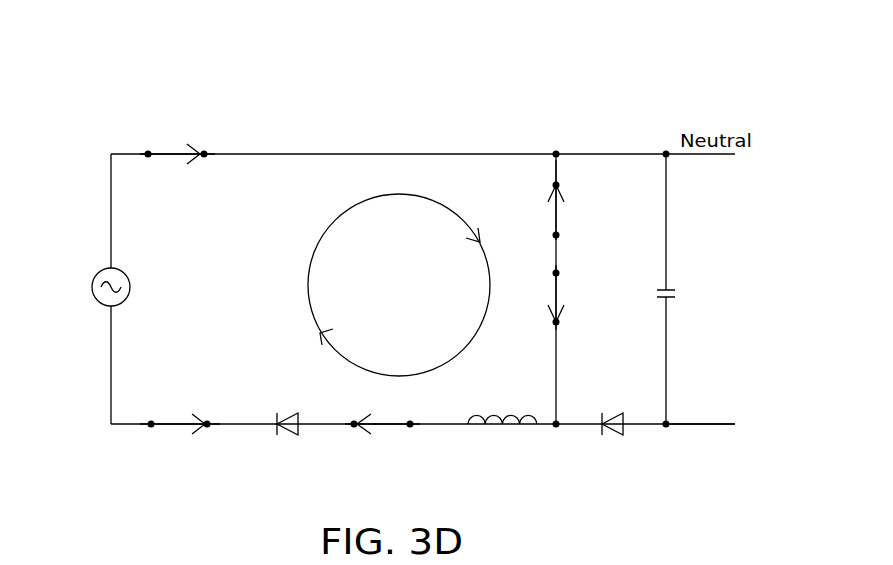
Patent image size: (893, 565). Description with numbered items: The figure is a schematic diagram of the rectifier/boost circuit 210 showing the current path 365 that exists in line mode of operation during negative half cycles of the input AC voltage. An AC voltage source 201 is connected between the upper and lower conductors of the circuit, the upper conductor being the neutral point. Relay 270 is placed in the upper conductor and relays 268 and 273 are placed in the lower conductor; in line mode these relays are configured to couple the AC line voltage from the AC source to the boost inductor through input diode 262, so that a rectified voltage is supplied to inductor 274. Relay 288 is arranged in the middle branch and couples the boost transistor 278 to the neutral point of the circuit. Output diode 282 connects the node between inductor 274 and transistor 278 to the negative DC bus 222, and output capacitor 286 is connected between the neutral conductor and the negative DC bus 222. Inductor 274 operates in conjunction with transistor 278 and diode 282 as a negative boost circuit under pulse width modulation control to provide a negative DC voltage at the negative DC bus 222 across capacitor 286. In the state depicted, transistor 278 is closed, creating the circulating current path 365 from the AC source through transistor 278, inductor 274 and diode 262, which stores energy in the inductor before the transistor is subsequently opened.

The rectifier/boost circuit 210 is at (562, 88).
The AC power source 201 is at (97, 273).
The relay 270 is at (169, 153).
The relay 268 is at (179, 426).
The input diode 262 is at (283, 435).
The relay 273 is at (380, 426).
The inductor 274 is at (512, 426).
The output diode 282 is at (607, 435).
The negative DC bus 222 is at (700, 426).
The output capacitor 286 is at (672, 300).
The relay 288 is at (558, 214).
The boost transistor 278 is at (558, 287).
The current path 365 is at (447, 205).